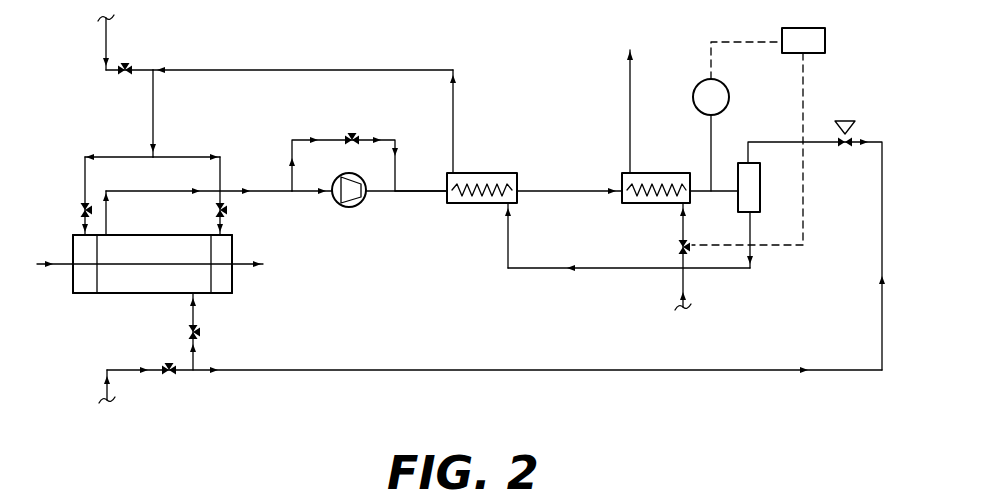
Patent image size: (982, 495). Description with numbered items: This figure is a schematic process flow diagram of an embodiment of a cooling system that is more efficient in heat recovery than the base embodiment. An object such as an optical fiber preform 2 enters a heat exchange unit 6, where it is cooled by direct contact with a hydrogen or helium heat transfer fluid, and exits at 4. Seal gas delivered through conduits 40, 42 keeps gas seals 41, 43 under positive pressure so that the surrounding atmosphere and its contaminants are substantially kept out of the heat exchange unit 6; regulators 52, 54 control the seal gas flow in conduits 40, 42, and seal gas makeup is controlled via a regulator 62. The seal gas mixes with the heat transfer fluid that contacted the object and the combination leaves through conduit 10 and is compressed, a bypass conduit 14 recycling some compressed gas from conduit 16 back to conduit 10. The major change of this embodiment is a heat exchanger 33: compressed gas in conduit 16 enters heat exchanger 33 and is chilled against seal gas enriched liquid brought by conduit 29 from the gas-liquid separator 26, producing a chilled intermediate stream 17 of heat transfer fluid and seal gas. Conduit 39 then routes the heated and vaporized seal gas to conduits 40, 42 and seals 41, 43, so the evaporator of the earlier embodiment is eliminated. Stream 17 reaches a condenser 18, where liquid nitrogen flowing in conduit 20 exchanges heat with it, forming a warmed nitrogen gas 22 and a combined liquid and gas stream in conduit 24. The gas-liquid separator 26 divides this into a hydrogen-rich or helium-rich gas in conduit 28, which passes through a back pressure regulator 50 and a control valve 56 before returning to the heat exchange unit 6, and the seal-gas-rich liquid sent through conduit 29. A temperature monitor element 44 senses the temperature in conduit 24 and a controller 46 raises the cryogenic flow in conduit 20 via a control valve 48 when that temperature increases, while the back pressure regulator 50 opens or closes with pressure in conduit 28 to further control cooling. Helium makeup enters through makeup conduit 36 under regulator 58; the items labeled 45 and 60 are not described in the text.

The optical fiber preform 2 is at (46, 268).
The exit 4 is at (240, 266).
The heat exchange unit 6 is at (130, 233).
The conduit 10 is at (142, 190).
The bypass conduit 14 is at (303, 137).
The conduit 16 is at (416, 185).
The chilled intermediate stream 17 is at (556, 185).
The condenser 18 is at (656, 172).
The conduit 20 is at (688, 288).
The warmed nitrogen gas 22 is at (628, 95).
The conduit 24 is at (720, 195).
The gas-liquid separator 26 is at (761, 180).
The conduit 28 is at (778, 138).
The conduit 29 is at (610, 273).
The heat exchanger 33 is at (485, 170).
The makeup conduit 36 is at (107, 368).
The conduit 39 is at (357, 68).
The conduit 40 is at (115, 152).
The seal 41 is at (72, 243).
The conduit 42 is at (190, 152).
The seal 43 is at (234, 243).
The temperature monitor element 44 is at (702, 82).
The vent outlet 45 is at (104, 40).
The controller 46 is at (815, 27).
The control valve 48 is at (675, 247).
The back pressure regulator 50 is at (849, 122).
The regulator 52 is at (78, 210).
The regulator 54 is at (230, 210).
The control valve 56 is at (205, 332).
The regulator 58 is at (173, 380).
The valve 60 is at (352, 130).
The regulator 62 is at (128, 62).